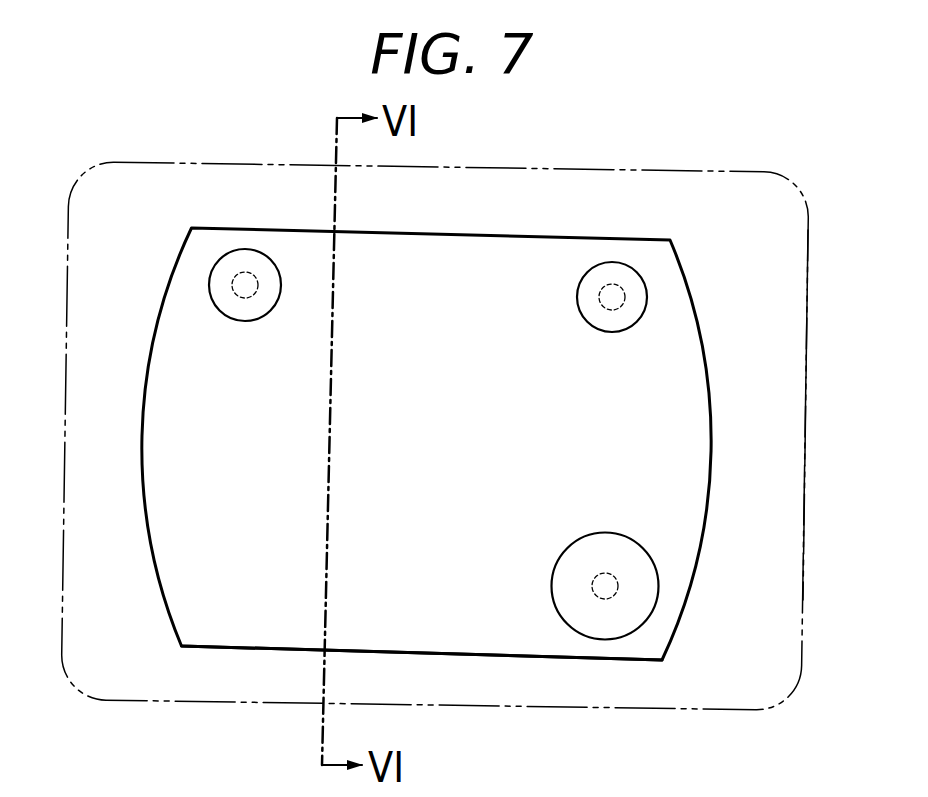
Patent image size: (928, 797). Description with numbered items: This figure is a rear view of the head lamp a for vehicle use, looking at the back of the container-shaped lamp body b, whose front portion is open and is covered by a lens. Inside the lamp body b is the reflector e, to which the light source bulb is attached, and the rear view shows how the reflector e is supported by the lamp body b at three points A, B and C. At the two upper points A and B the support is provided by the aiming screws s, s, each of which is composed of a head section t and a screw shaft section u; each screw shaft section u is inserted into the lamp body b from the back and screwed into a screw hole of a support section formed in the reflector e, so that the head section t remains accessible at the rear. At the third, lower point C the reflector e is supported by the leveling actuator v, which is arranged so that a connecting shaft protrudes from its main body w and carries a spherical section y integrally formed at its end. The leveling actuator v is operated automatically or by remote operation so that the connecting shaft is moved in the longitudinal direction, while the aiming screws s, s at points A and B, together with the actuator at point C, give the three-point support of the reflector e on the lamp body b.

The head lamp a is at (825, 217).
The lamp body b is at (805, 425).
The reflector e is at (255, 650).
The support point A is at (280, 261).
The support point B is at (652, 281).
The support point C is at (659, 560).
The head section t is at (273, 298).
The aiming screw s is at (258, 320).
The screw shaft section u is at (232, 288).
The leveling actuator v is at (572, 565).
The spherical section y is at (592, 591).
The main body w is at (644, 601).